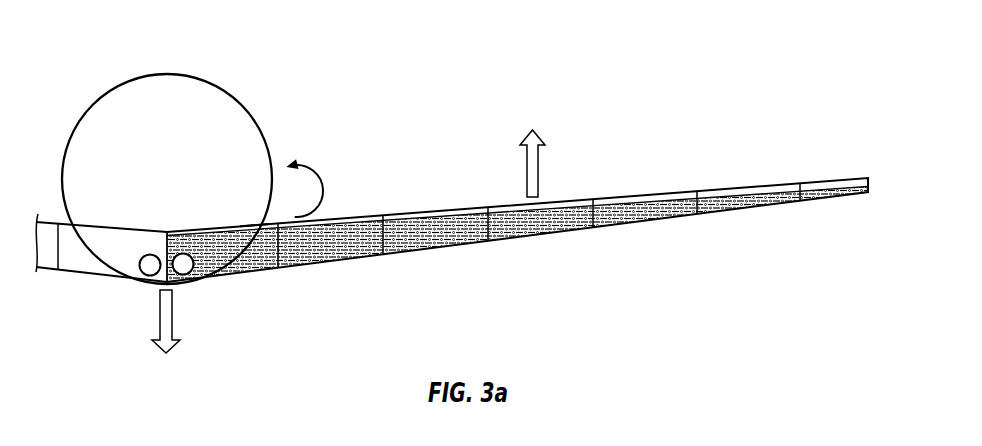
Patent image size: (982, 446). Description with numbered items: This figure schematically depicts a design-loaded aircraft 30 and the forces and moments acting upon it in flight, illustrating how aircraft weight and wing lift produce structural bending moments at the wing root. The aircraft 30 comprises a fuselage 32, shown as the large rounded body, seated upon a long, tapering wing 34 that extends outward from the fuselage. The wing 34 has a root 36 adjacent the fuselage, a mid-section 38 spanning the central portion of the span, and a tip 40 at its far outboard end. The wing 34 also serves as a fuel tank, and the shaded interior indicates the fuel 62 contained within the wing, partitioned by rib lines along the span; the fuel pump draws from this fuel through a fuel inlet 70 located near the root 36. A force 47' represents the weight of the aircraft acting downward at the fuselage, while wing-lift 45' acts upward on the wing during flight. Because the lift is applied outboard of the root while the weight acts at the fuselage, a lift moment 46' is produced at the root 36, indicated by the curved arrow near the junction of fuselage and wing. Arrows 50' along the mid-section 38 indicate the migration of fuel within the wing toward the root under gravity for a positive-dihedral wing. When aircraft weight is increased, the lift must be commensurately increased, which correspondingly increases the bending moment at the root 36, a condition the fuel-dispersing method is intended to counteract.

The aircraft 30 is at (479, 55).
The fuselage 32 is at (244, 95).
The wing 34 is at (445, 201).
The root 36 is at (277, 210).
The mid-section 38 is at (432, 278).
The tip 40 is at (859, 161).
The fuel 62 is at (545, 214).
The fuel inlet 70 is at (204, 272).
The wing-lift 45' is at (537, 153).
The lift moment 46' is at (325, 188).
The aircraft weight force 47' is at (169, 336).
The fuel migration direction 50' is at (697, 229).